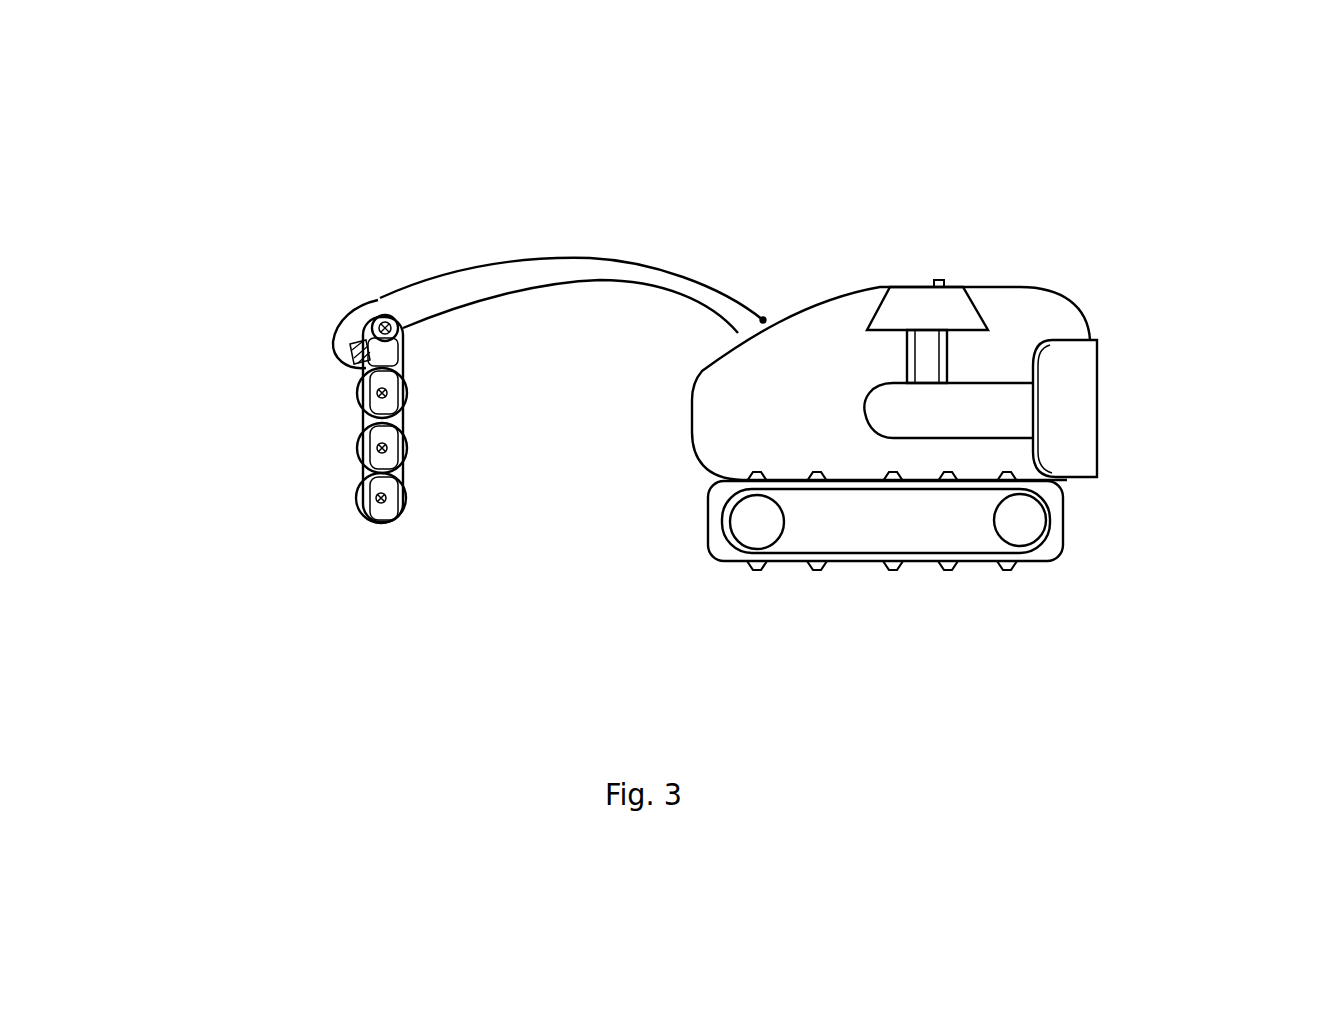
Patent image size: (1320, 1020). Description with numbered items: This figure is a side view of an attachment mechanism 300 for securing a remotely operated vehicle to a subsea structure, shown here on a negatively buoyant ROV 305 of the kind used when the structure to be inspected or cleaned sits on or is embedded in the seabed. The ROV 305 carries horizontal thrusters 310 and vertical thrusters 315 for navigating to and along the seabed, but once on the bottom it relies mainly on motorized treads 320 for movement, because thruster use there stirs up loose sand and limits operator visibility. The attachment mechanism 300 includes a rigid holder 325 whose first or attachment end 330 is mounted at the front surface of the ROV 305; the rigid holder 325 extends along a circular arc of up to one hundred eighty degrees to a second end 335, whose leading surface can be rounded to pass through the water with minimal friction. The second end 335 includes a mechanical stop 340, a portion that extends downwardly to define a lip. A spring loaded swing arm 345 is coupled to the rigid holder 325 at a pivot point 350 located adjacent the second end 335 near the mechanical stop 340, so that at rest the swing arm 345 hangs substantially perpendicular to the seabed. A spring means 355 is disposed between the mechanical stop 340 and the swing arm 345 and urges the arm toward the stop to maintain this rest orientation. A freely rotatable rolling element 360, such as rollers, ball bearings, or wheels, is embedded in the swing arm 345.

The attachment mechanism 300 is at (238, 172).
The negatively buoyant ROV 305 is at (813, 367).
The horizontal thrusters 310 is at (1078, 366).
The vertical thrusters 315 is at (953, 315).
The motorized treads 320 is at (963, 517).
The rigid holder 325 is at (591, 266).
The attachment end 330 is at (762, 320).
The second end 335 is at (333, 340).
The mechanical stop 340 is at (346, 360).
The spring loaded swing arm 345 is at (401, 471).
The pivot point 350 is at (386, 327).
The spring means 355 is at (373, 348).
The rolling element 360 is at (363, 395).